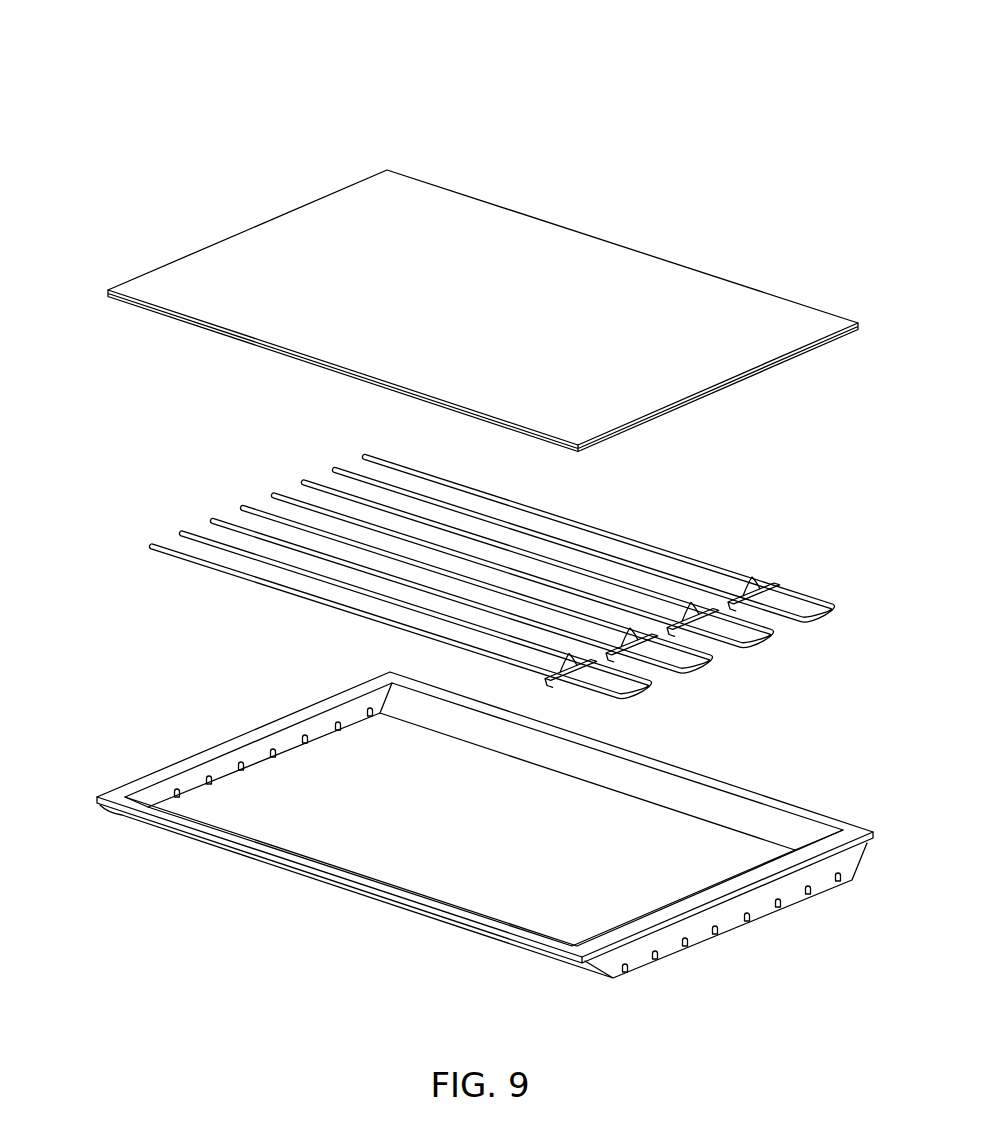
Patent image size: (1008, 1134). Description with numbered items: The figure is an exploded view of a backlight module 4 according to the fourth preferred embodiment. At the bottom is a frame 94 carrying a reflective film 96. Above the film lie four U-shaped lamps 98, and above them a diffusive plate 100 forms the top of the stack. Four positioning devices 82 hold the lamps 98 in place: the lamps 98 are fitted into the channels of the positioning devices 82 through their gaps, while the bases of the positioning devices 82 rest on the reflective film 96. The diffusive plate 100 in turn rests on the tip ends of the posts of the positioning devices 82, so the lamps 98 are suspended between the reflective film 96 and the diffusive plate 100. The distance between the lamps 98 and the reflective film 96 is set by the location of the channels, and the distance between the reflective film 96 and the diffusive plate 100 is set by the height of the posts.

The backlight module 4 is at (702, 88).
The diffusive plate 100 is at (705, 313).
The U-shaped lamps 98 is at (332, 469).
The positioning devices 82 is at (699, 588).
The frame 94 is at (820, 817).
The reflective film 96 is at (437, 863).